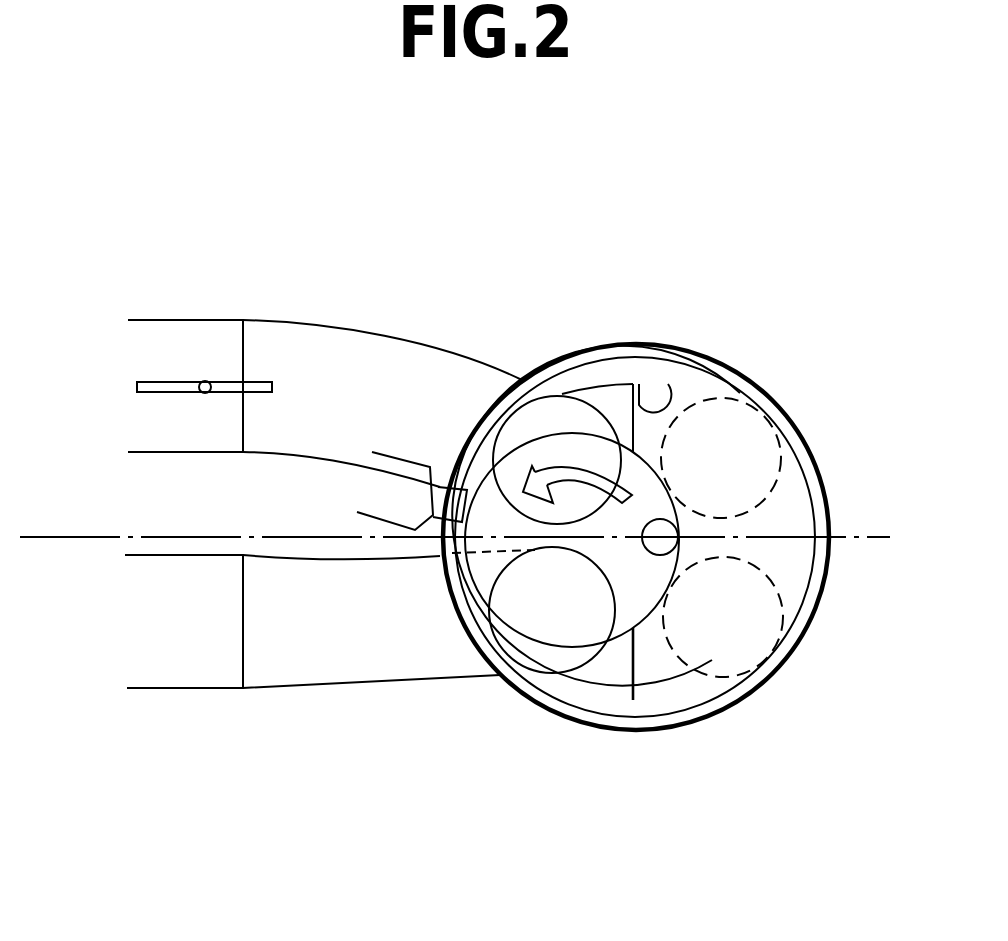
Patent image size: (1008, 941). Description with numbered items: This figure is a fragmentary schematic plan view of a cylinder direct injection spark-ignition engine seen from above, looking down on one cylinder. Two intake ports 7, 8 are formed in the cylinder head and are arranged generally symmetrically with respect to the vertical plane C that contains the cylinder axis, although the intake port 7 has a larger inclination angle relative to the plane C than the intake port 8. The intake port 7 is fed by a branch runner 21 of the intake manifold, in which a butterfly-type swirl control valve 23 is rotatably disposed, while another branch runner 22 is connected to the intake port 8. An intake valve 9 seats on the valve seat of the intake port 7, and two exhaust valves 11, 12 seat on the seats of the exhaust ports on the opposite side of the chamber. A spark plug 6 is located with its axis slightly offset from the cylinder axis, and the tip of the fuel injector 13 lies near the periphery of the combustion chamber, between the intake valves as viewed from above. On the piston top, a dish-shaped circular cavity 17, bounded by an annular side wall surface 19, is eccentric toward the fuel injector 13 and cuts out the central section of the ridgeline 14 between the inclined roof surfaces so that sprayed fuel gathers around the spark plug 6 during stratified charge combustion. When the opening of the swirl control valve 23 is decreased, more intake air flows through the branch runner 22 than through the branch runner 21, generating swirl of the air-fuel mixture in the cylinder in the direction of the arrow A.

The spark plug 6 is at (652, 550).
The intake port 7 is at (316, 350).
The intake port 8 is at (345, 672).
The intake valve 9 is at (563, 415).
The exhaust valve 11 is at (753, 407).
The exhaust valve 12 is at (741, 650).
The fuel injector 13 is at (388, 488).
The ridgeline 14 is at (662, 405).
The cavity 17 is at (650, 590).
The side wall surface 19 is at (676, 563).
The branch runner 21 is at (134, 322).
The branch runner 22 is at (190, 688).
The swirl control valve 23 is at (163, 382).
The arrow A is at (583, 470).
The vertical plane C is at (858, 548).